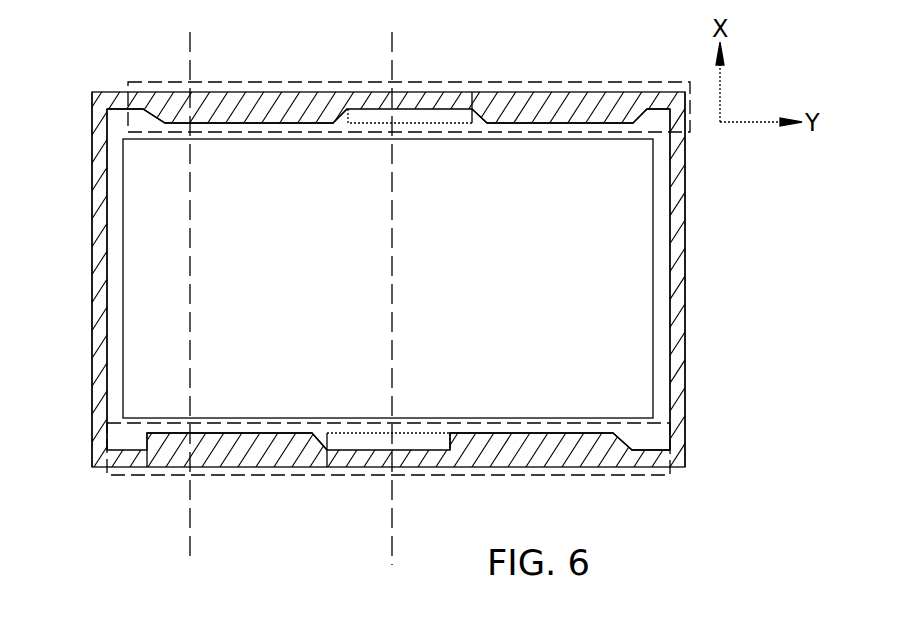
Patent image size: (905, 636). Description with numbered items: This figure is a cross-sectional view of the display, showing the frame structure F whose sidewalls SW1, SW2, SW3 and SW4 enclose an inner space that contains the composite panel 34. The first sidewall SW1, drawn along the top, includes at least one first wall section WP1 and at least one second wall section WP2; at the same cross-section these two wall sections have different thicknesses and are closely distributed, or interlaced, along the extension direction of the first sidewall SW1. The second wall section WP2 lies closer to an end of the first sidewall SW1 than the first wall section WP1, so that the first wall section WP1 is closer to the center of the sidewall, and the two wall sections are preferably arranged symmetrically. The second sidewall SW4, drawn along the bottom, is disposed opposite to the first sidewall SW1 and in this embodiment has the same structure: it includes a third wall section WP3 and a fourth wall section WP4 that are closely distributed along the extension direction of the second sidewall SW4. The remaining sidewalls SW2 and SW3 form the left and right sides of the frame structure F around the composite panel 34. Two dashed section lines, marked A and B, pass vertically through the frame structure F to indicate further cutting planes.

The frame structure F is at (93, 270).
The composite panel 34 is at (518, 308).
The first sidewall SW1 is at (158, 82).
The sidewall SW2 is at (93, 162).
The sidewall SW3 is at (697, 160).
The second sidewall SW4 is at (138, 476).
The first wall section WP1 is at (452, 87).
The second wall section WP2 is at (272, 82).
The third wall section WP3 is at (428, 470).
The fourth wall section WP4 is at (248, 470).
The section line A-A' A is at (395, 299).
The section line B-B' B is at (195, 298).